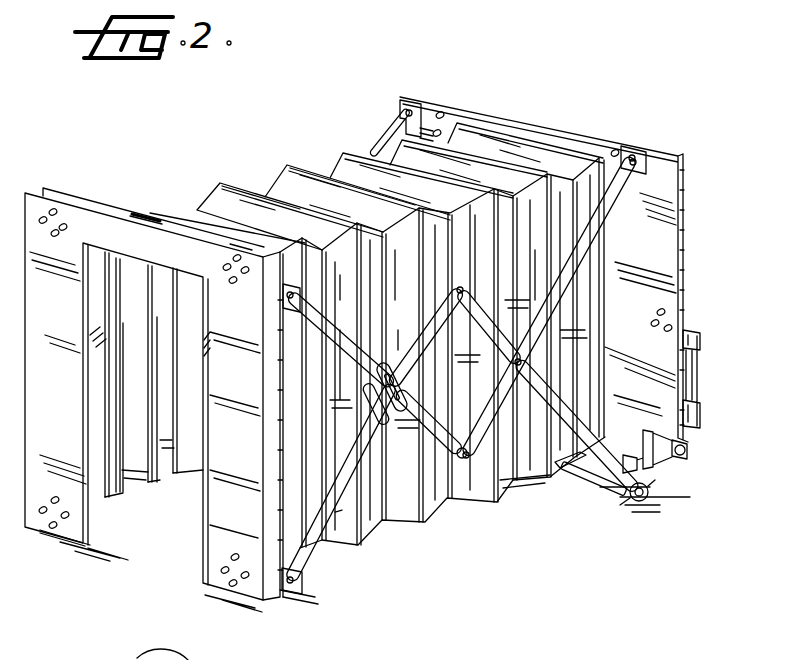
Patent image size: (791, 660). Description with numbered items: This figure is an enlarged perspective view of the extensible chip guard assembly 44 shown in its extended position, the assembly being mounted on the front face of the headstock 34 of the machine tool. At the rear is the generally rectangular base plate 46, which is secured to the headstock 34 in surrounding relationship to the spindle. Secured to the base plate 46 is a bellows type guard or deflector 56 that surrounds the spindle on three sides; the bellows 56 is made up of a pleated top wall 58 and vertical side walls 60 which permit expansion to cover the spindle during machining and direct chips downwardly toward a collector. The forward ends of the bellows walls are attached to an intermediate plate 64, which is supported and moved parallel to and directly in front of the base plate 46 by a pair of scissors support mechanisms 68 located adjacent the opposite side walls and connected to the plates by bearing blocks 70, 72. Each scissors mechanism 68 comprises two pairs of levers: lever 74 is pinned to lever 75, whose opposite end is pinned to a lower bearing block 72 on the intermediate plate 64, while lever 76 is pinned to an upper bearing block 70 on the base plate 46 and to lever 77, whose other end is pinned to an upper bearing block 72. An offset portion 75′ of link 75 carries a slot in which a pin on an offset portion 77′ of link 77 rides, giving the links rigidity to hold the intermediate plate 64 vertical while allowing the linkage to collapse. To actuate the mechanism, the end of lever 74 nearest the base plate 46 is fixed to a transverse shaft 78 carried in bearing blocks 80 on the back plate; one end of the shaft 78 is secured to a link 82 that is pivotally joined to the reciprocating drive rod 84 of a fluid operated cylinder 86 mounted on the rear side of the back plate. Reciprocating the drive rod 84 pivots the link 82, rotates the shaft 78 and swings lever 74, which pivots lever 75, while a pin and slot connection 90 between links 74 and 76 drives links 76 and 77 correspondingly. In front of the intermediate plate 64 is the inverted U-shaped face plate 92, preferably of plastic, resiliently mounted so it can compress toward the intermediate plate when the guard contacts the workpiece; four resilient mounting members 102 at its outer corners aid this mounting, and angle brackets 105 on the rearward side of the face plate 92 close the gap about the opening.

The headstock 34 is at (640, 658).
The extensible chip guard assembly 44 is at (200, 172).
The base plate 46 is at (665, 241).
The bellows type guard or deflector 56 is at (287, 187).
The pleated top wall 58 is at (332, 177).
The vertical side walls 60 is at (143, 490).
The intermediate plate 64 is at (282, 590).
The scissors support mechanism 68 is at (464, 464).
The bearing block 70 is at (417, 62).
The bearing block 72 is at (288, 282).
The lever 74 is at (547, 463).
The lever 75 is at (332, 514).
The offset portion 75′ is at (407, 412).
The lever 76 is at (615, 210).
The lever 77 is at (305, 318).
The offset portion 77′ is at (395, 354).
The transverse shaft 78 is at (567, 477).
The bearing blocks 80 is at (640, 466).
The link 82 is at (650, 505).
The reciprocating drive rod 84 is at (690, 446).
The fluid operated cylinder 86 is at (702, 338).
The pin and slot connection 90 is at (548, 322).
The face plate 92 is at (210, 560).
The resilient mounting members 102 is at (62, 197).
The angle brackets 105 is at (97, 528).